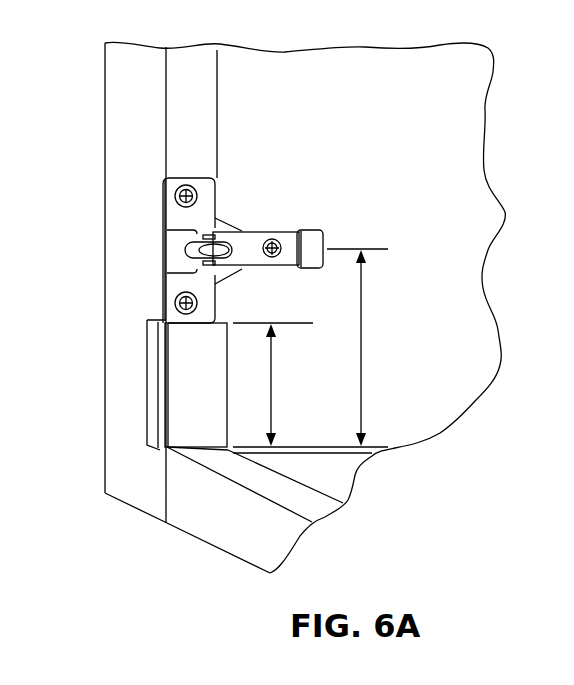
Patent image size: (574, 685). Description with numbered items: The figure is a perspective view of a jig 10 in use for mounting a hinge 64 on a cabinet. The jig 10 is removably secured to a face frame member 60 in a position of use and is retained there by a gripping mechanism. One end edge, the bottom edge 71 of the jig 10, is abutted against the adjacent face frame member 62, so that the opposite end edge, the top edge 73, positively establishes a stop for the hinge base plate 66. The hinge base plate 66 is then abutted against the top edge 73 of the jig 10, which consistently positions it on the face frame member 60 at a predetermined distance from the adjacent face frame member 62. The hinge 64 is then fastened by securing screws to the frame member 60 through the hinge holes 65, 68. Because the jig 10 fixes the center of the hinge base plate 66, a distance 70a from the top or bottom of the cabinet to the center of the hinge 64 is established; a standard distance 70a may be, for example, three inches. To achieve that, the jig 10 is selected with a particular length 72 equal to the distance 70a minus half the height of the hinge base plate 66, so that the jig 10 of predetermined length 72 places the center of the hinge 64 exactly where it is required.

The jig 10 is at (180, 383).
The face frame member 60 is at (130, 82).
The adjacent face frame member 62 is at (222, 525).
The hinge 64 is at (260, 175).
The hinge hole 65 is at (168, 213).
The hinge base plate 66 is at (190, 175).
The hinge hole 68 is at (165, 291).
The distance 70a is at (361, 338).
The bottom edge 71 is at (207, 450).
The length 72 is at (271, 380).
The top edge 73 is at (222, 313).